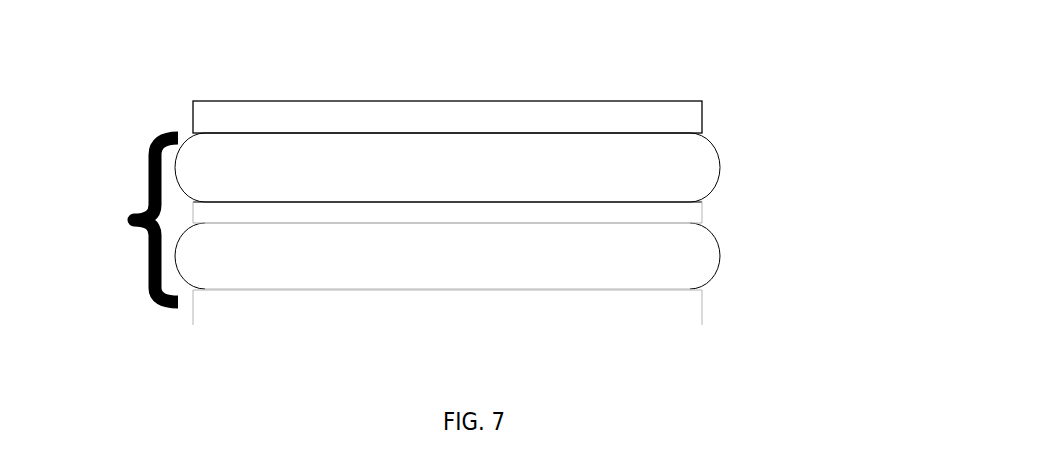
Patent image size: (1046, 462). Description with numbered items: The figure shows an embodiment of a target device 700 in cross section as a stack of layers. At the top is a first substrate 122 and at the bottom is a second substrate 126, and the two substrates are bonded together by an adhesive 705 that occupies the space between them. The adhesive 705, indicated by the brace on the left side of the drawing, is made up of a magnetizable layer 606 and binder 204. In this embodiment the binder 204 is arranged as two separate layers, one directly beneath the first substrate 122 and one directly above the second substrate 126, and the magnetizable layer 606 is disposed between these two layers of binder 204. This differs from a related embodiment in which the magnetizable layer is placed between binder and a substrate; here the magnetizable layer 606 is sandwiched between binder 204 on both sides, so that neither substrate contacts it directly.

The target device 700 is at (536, 74).
The first substrate 122 is at (702, 105).
The binder 204 is at (703, 172).
The magnetizable layer 606 is at (693, 215).
The second substrate 126 is at (702, 310).
The adhesive 705 is at (133, 222).